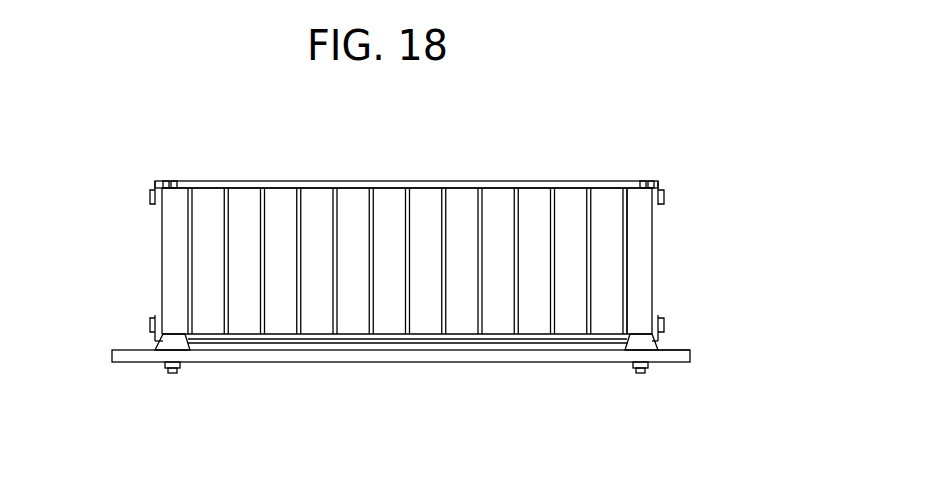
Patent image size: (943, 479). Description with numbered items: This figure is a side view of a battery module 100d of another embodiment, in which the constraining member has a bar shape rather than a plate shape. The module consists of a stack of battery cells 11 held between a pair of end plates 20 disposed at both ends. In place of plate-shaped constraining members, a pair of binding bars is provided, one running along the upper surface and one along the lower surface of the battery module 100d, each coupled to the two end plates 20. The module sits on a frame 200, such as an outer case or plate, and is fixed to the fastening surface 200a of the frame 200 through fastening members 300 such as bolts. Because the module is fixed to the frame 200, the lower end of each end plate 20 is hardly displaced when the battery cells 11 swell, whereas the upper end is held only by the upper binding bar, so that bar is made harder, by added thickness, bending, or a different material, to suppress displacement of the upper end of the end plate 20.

The battery module 100d is at (542, 160).
The battery cell 11 is at (348, 223).
The end plate 20 is at (637, 252).
The fastening member 300 is at (168, 182).
The frame 200 is at (677, 353).
The fastening surface 200a is at (678, 338).